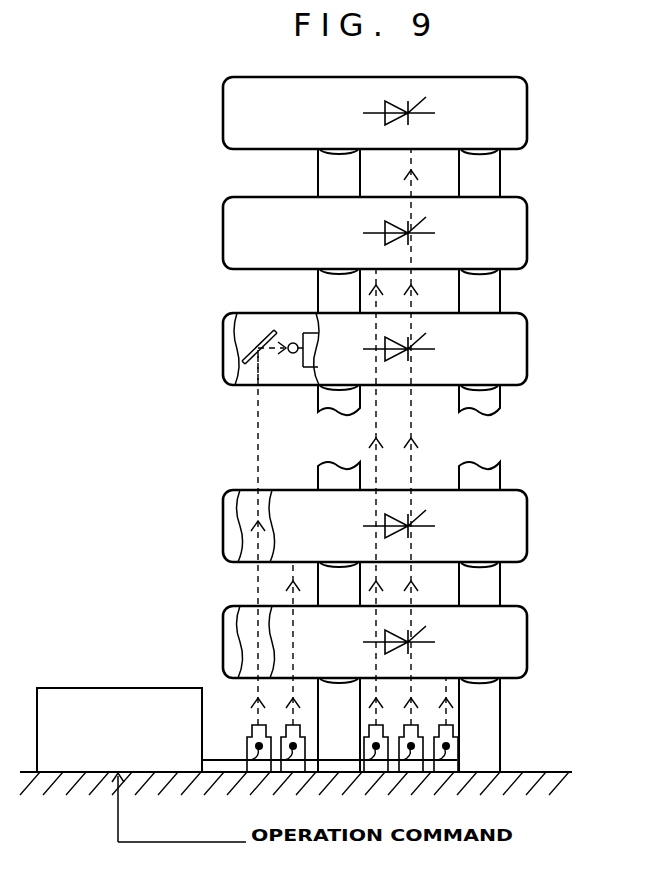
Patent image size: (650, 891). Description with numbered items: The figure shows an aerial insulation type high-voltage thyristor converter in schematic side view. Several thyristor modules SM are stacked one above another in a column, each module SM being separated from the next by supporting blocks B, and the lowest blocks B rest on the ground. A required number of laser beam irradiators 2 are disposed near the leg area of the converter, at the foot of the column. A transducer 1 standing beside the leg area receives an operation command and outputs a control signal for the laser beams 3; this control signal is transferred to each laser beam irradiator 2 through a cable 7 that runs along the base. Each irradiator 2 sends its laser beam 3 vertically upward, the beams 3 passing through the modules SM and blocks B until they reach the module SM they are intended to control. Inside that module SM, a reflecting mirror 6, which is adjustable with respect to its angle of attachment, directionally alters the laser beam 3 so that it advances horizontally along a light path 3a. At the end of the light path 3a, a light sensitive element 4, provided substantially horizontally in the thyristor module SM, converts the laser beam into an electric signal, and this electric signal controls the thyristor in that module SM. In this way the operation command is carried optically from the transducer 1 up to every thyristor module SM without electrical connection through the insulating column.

The transducer 1 is at (105, 688).
The laser beam irradiator 2 is at (250, 735).
The laser beam 3 is at (256, 450).
The light path 3a is at (274, 352).
The light sensitive element 4 is at (298, 341).
The reflecting mirror 6 is at (248, 335).
The cable 7 is at (227, 739).
The thyristor module SM is at (527, 113).
The insulating block B is at (500, 175).